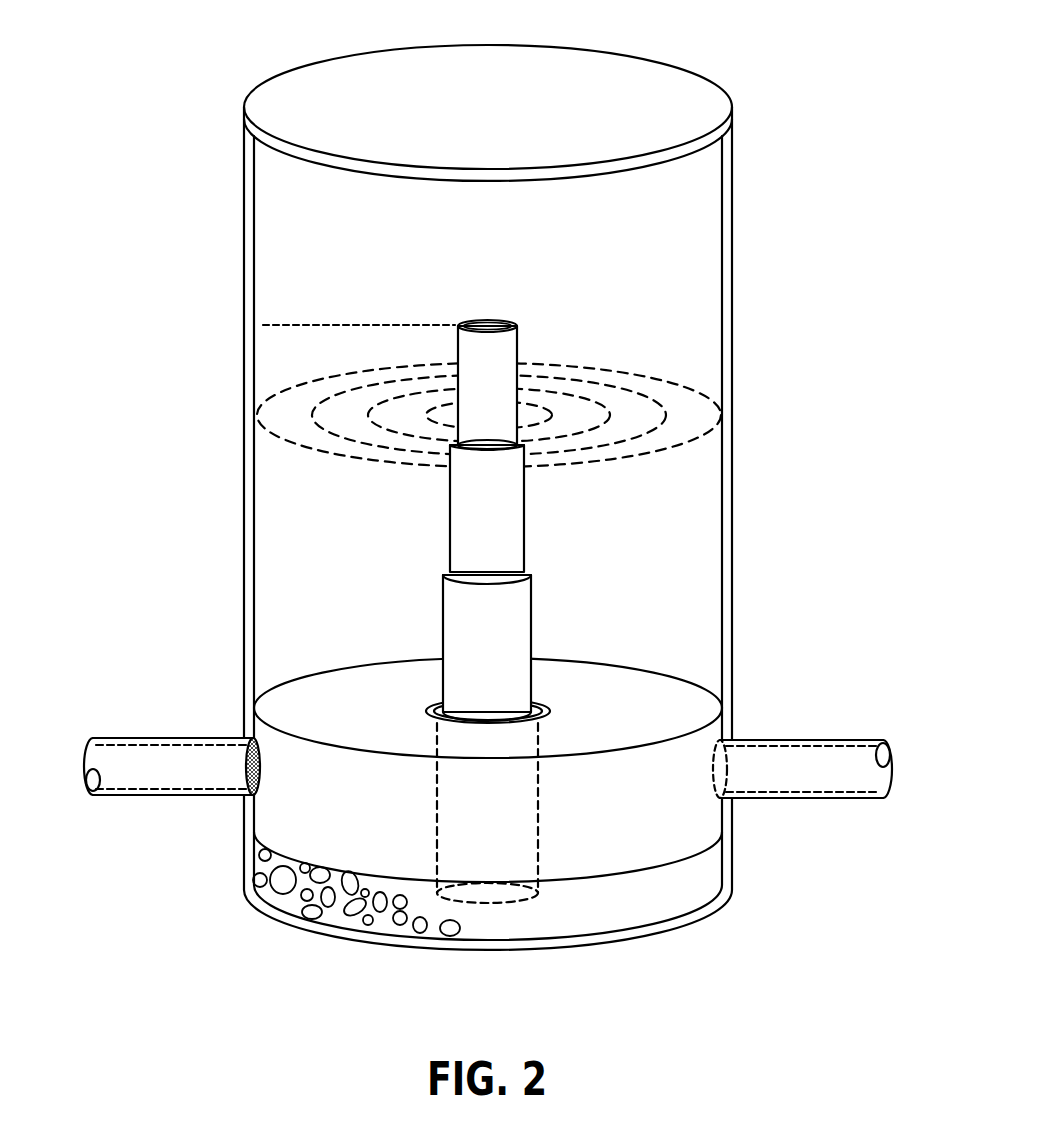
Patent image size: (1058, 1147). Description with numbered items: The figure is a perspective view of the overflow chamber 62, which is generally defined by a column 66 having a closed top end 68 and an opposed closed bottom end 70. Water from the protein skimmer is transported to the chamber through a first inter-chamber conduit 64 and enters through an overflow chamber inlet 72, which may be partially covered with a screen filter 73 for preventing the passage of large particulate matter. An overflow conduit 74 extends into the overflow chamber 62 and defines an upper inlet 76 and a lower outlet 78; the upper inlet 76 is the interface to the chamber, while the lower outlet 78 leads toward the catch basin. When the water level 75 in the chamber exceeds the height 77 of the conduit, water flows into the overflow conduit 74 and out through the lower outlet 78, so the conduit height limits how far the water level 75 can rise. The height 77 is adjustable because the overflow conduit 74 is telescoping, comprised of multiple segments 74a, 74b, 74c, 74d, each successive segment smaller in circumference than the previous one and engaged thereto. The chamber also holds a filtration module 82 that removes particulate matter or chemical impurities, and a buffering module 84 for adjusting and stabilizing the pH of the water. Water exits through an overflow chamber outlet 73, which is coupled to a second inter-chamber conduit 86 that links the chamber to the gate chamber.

The overflow chamber 62 is at (137, 57).
The closed top end 68 is at (715, 62).
The column 66 is at (707, 225).
The closed bottom end 70 is at (652, 947).
The height 77 is at (233, 321).
The water level 75 is at (280, 410).
The filtration module 82 is at (693, 828).
The buffering module 84 is at (302, 915).
The overflow conduit 74 is at (523, 488).
The segment 74a is at (540, 740).
The segment 74b is at (525, 630).
The segment 74c is at (523, 545).
The segment 74d is at (513, 397).
The upper inlet 76 is at (507, 323).
The lower outlet 78 is at (500, 905).
The first inter-chamber conduit 64 is at (143, 797).
The overflow chamber inlet 72 is at (237, 763).
The screen filter 73 is at (233, 793).
The second inter-chamber conduit 86 is at (847, 793).